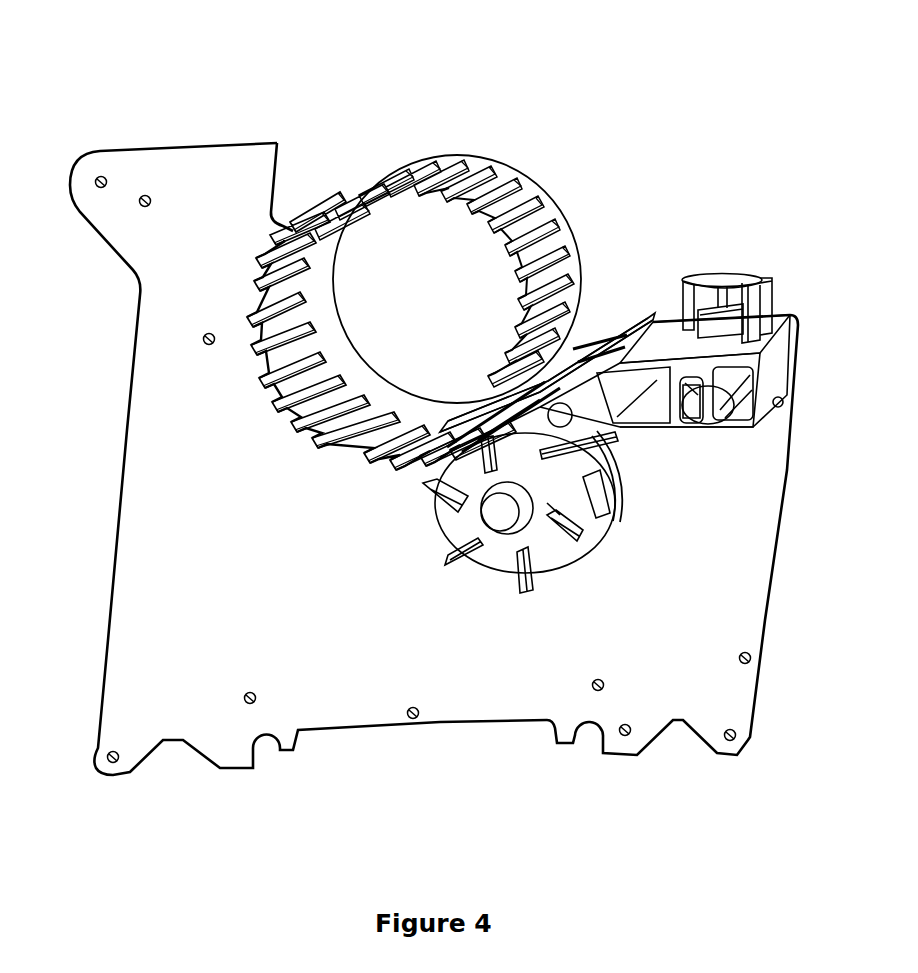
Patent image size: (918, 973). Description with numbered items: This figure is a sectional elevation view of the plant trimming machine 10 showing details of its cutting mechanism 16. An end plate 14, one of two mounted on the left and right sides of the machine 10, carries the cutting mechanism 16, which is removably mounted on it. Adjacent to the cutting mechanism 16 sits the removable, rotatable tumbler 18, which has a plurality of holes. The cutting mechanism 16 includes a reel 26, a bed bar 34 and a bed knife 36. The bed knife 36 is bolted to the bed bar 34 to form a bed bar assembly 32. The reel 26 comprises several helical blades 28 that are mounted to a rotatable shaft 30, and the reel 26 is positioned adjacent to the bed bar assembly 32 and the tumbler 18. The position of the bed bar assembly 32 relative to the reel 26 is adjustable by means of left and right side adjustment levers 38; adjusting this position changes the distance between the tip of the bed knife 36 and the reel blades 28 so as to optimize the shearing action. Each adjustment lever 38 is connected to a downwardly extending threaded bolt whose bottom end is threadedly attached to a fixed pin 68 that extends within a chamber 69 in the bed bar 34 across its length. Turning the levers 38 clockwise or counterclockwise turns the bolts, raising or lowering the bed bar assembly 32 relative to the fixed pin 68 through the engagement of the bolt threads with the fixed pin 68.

The plant trimming machine 10 is at (225, 43).
The end plate 14 is at (140, 497).
The cutting mechanism 16 is at (431, 266).
The tumbler 18 is at (445, 156).
The reel 26 is at (494, 521).
The helical blades 28 is at (452, 558).
The rotatable shaft 30 is at (500, 520).
The bed bar assembly 32 is at (615, 334).
The bed bar 34 is at (665, 372).
The bed knife 36 is at (565, 370).
The adjustment lever 38 is at (737, 280).
The fixed pin 68 is at (690, 412).
The chamber 69 is at (727, 410).